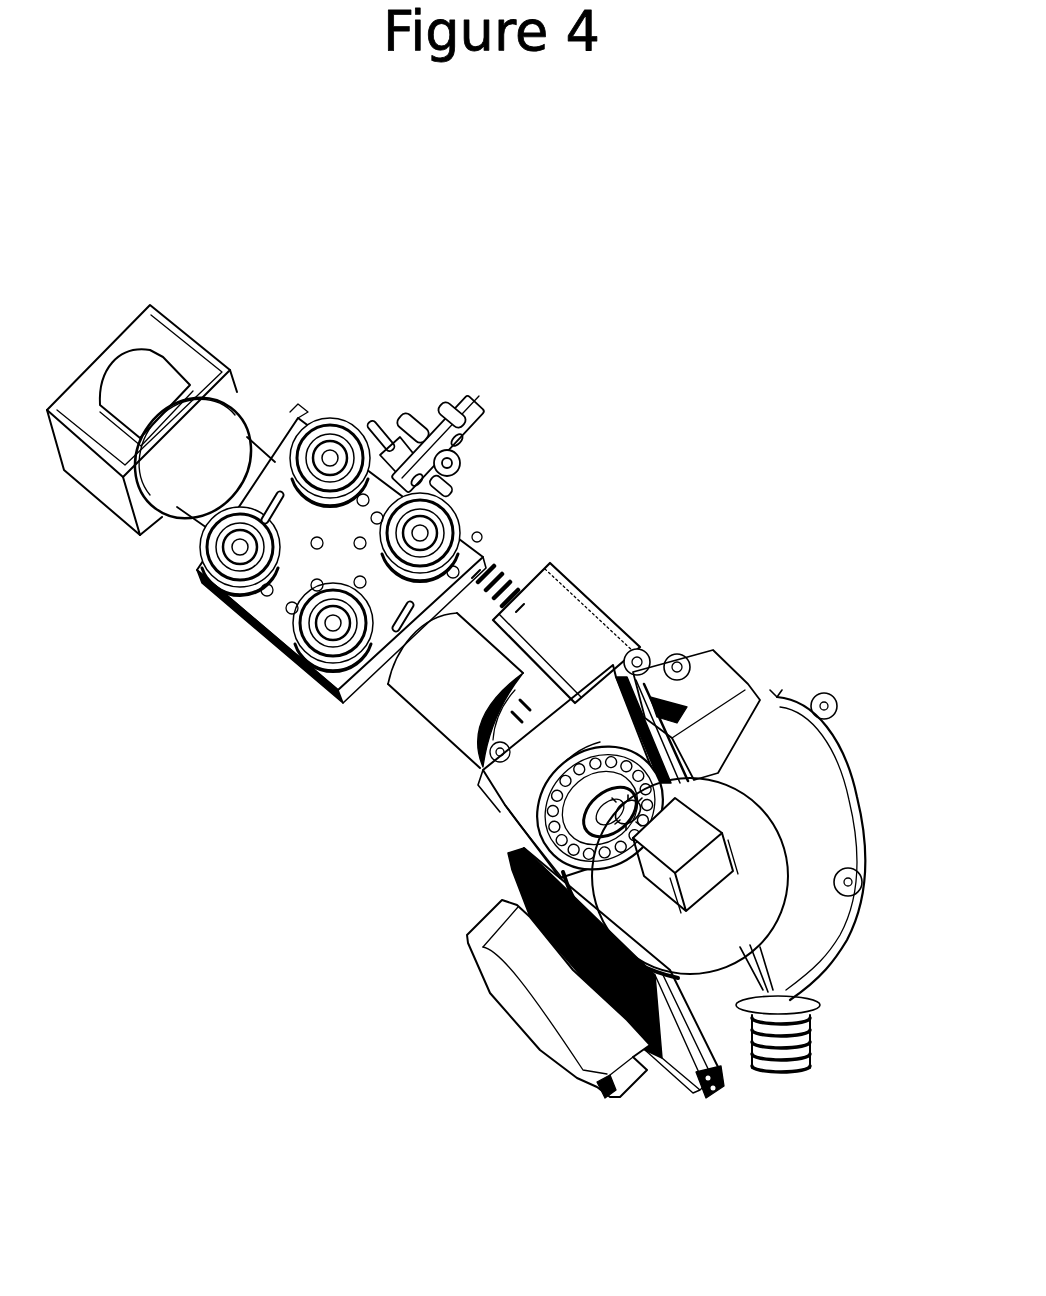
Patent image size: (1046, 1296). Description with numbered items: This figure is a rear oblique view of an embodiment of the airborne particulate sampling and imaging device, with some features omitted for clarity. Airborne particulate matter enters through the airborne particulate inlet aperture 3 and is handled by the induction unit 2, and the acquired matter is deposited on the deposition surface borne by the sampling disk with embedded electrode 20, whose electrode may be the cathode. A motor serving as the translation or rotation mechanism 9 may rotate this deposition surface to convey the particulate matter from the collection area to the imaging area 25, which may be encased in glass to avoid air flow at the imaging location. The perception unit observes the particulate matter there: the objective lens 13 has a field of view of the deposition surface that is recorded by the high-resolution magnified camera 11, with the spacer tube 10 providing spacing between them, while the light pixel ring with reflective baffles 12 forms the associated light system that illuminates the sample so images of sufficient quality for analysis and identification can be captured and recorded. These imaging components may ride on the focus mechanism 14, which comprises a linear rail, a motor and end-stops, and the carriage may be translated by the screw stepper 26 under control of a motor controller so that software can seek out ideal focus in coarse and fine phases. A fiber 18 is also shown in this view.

The induction unit 2 is at (527, 1011).
The airborne particulate inlet aperture 3 is at (795, 1079).
The translation or rotation mechanism 9 is at (699, 834).
The spacer tube 10 is at (455, 688).
The high-resolution magnified camera 11 is at (150, 378).
The light pixel ring with reflective baffles 12 is at (552, 837).
The objective lens 13 is at (484, 772).
The focus mechanism 14 is at (512, 566).
The fiber 18 is at (669, 1077).
The sampling disk with embedded electrode 20 is at (750, 872).
The imaging area 25 is at (641, 810).
The screw stepper 26 is at (578, 627).